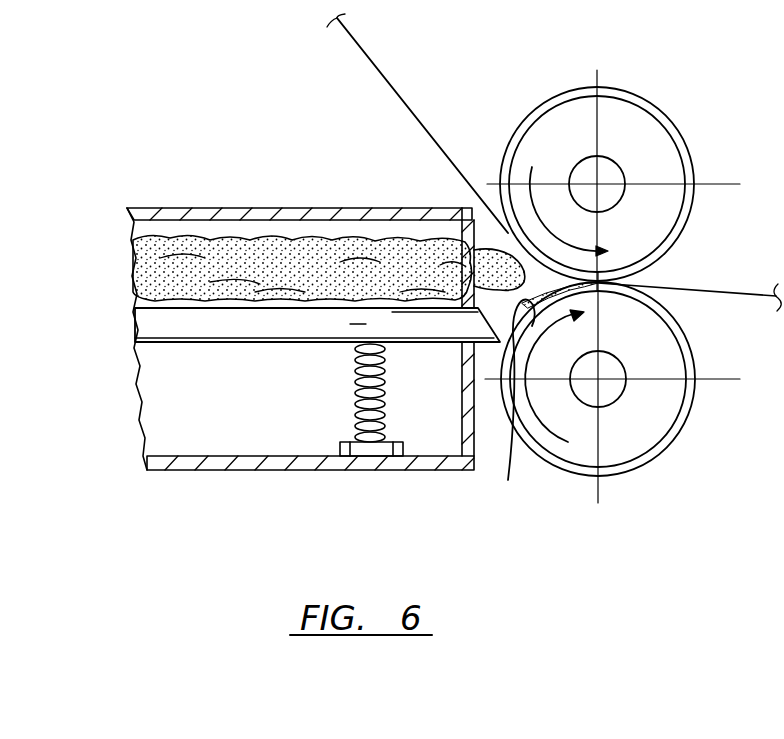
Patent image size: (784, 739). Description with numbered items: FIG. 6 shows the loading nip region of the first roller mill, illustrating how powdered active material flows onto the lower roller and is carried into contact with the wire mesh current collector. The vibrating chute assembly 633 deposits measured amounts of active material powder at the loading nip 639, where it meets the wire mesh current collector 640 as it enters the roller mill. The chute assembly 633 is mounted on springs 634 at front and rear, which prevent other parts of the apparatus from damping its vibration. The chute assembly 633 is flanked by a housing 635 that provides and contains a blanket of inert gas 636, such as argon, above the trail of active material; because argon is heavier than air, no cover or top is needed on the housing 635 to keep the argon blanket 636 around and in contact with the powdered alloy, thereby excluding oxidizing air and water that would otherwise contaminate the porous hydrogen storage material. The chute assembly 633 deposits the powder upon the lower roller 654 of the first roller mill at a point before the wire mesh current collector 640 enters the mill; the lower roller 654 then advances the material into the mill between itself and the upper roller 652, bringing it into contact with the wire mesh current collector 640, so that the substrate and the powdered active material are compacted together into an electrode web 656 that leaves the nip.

The chute assembly 633 is at (237, 326).
The springs 634 is at (355, 398).
The housing 635 is at (250, 470).
The blanket of inert gas 636 is at (290, 262).
The loading nip 639 is at (510, 405).
The wire mesh current collector 640 is at (405, 97).
The upper roller 652 is at (665, 160).
The lower roller 654 is at (640, 440).
The electrode web 656 is at (736, 294).